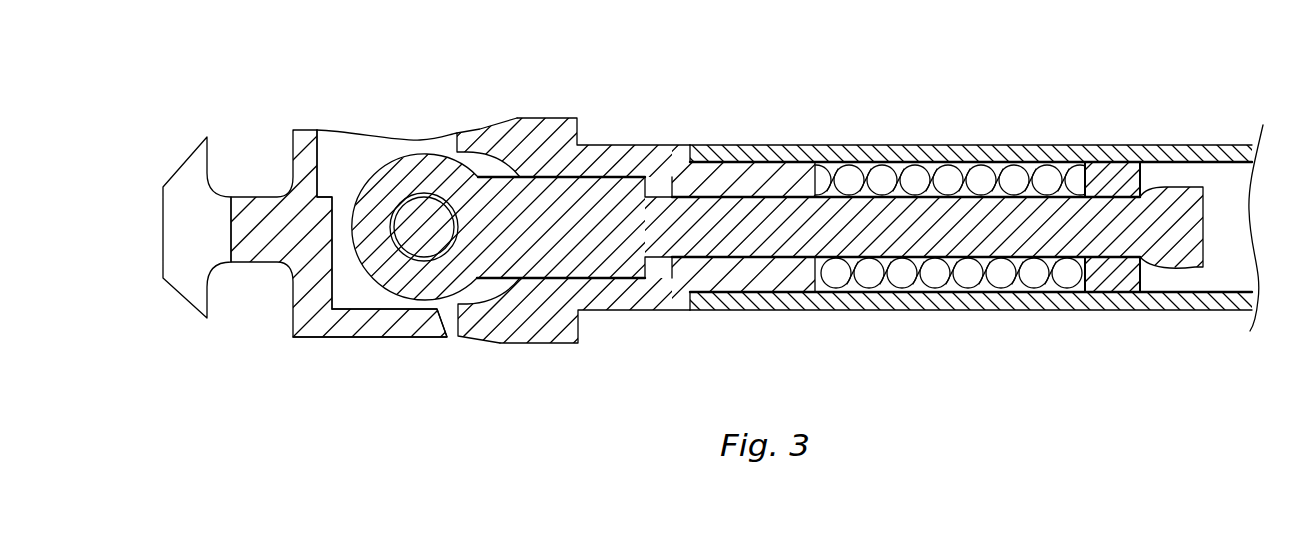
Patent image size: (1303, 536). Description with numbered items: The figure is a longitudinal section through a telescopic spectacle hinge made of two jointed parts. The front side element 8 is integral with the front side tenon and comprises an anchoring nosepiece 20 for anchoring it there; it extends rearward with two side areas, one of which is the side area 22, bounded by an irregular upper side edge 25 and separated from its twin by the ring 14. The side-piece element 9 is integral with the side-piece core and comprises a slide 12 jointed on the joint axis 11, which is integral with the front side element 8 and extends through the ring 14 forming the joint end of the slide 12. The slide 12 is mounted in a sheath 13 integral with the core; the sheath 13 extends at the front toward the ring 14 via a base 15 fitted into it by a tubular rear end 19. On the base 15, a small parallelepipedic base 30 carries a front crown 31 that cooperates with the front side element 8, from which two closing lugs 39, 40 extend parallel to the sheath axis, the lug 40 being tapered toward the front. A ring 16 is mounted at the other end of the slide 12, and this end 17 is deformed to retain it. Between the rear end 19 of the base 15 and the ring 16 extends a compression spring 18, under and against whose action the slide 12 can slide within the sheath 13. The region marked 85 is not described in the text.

The front side element 8 is at (262, 212).
The side-piece element 9 is at (819, 138).
The joint axis 11 is at (423, 225).
The slide 12 is at (747, 227).
The sheath 13 is at (838, 300).
The ring 14 is at (390, 272).
The base 15 is at (550, 320).
The ring 16 is at (1114, 183).
The end of the slide 17 is at (1182, 250).
The spring 18 is at (983, 183).
The rear end of the base 19 is at (773, 184).
The anchoring nosepiece 20 is at (192, 283).
The side area 22 is at (337, 152).
The upper side edge 25 is at (378, 130).
The parallelepipedic base 30 is at (637, 299).
The front crown 31 is at (557, 138).
The closing lug 39 is at (472, 147).
The closing lug 40 is at (470, 318).
The bottom block 85 is at (432, 327).